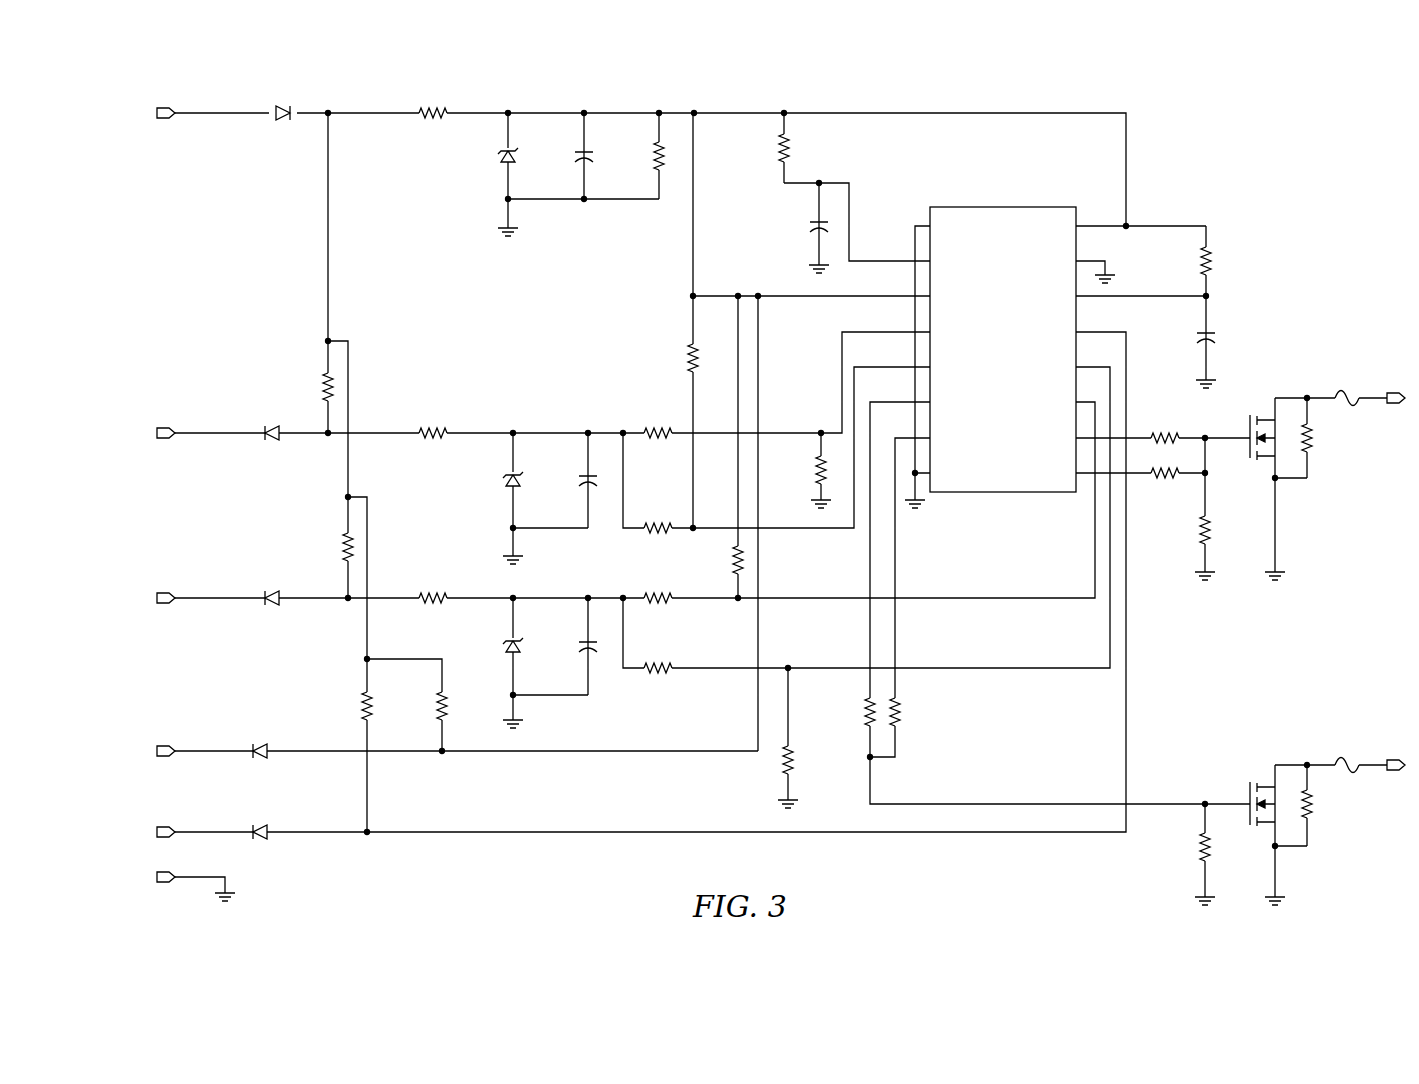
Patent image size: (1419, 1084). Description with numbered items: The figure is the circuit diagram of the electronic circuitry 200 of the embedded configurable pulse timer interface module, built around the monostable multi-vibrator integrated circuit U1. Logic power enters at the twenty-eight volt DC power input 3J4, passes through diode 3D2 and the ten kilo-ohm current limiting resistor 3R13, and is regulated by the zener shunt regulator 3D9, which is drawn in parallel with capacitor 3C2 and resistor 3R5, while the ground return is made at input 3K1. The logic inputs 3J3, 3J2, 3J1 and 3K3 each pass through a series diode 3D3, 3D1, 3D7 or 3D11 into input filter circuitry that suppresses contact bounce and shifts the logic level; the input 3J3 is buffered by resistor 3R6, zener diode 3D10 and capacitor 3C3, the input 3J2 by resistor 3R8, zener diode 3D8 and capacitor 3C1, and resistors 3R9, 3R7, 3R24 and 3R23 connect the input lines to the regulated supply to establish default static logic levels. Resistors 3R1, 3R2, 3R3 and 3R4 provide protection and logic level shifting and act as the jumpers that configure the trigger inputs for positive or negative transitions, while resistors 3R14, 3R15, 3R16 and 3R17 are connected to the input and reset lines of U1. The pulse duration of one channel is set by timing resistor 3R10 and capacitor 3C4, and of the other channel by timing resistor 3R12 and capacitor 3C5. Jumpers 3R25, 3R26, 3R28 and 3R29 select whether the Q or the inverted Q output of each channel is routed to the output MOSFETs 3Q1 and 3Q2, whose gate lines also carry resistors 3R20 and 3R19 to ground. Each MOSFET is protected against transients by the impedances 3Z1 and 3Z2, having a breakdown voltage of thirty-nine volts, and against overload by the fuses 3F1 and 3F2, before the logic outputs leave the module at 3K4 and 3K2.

The pulse timer interface module circuitry 200 is at (1242, 143).
The power input 3J4 is at (147, 114).
The logic input 3J3 is at (147, 434).
The logic input 3J2 is at (147, 599).
The reset input 3J1 is at (147, 752).
The reset input 3K3 is at (146, 833).
The ground connection input 3K1 is at (146, 878).
The logic output 3K2 is at (1392, 388).
The logic output 3K4 is at (1392, 755).
The diode 3D2 is at (281, 126).
The diode 3D3 is at (270, 446).
The diode 3D1 is at (270, 611).
The diode 3D7 is at (258, 764).
The diode 3D11 is at (258, 845).
The zener shunt regulator 3D9 is at (487, 156).
The zener diode 3D10 is at (487, 461).
The zener diode 3D8 is at (490, 627).
The capacitor 3C2 is at (564, 157).
The timing capacitor 3C4 is at (799, 227).
The capacitor 3C3 is at (568, 481).
The capacitor 3C1 is at (570, 647).
The timing capacitor 3C5 is at (1185, 338).
The current limiting resistor 3R13 is at (432, 102).
The resistor 3R5 is at (640, 156).
The timing resistor 3R10 is at (760, 148).
The timing resistor 3R12 is at (1181, 261).
The resistor 3R9 is at (308, 387).
The resistor 3R7 is at (329, 547).
The resistor 3R24 is at (342, 745).
The resistor 3R23 is at (407, 705).
The resistor 3R6 is at (431, 422).
The resistor 3R8 is at (431, 587).
The resistor 3R1 is at (658, 422).
The resistor 3R2 is at (658, 517).
The resistor 3R3 is at (658, 587).
The resistor 3R4 is at (658, 657).
The resistor 3R14 is at (669, 358).
The resistor 3R15 is at (714, 572).
The resistor 3R17 is at (798, 466).
The resistor 3R16 is at (809, 734).
The resistor 3R25 is at (845, 712).
The jumper 3R26 is at (916, 712).
The jumper 3R28 is at (1162, 427).
The jumper 3R29 is at (1162, 484).
The resistor 3R19 is at (1181, 530).
The resistor 3R20 is at (1180, 847).
The impedance 3Z2 is at (1324, 438).
The impedance 3Z1 is at (1324, 805).
The fuse 3F2 is at (1344, 390).
The fuse 3F1 is at (1344, 757).
The output MOSFET 3Q2 is at (1251, 452).
The output MOSFET 3Q1 is at (1251, 819).
The monostable multi-vibrator integrated circuit U1 is at (1003, 364).